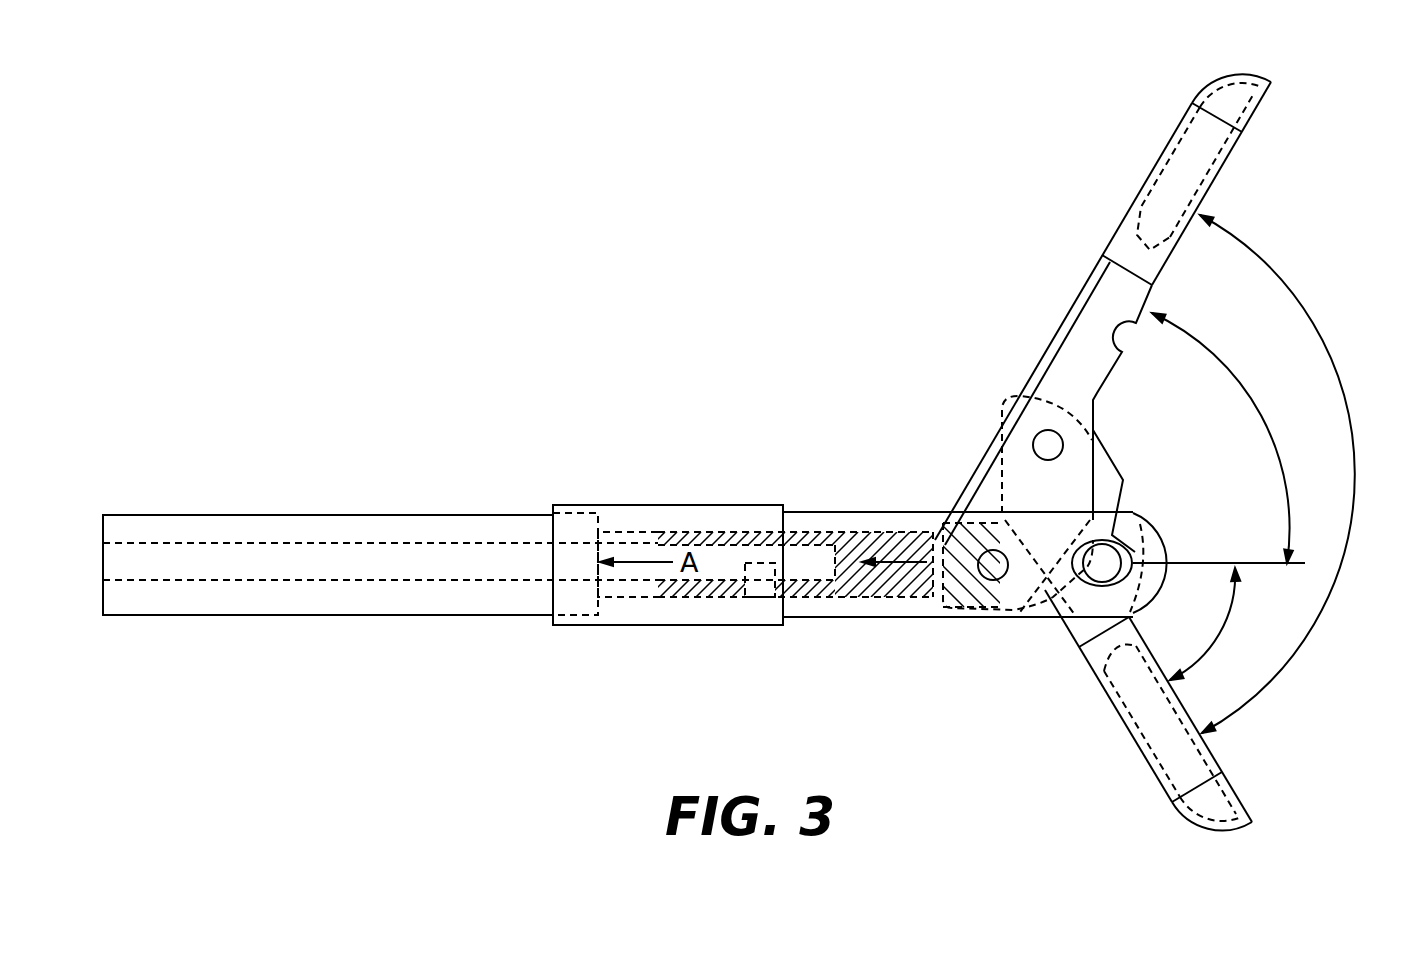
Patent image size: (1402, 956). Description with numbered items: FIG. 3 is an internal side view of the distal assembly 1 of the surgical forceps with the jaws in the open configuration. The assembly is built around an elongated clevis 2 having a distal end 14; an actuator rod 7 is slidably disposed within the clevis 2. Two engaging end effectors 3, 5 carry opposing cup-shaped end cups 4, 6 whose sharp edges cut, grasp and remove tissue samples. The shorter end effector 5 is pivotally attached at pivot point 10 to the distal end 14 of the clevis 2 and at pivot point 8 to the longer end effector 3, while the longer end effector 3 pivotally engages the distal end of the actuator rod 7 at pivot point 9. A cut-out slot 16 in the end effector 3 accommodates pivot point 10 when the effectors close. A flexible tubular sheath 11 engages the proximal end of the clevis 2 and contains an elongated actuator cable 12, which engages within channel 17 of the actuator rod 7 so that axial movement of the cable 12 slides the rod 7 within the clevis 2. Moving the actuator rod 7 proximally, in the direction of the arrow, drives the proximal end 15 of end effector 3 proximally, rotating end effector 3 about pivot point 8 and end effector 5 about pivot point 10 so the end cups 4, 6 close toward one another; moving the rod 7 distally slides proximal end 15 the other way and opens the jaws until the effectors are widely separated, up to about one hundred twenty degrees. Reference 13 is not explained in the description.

The distal assembly 1 is at (833, 512).
The clevis 2 is at (897, 617).
The end effector 3 is at (1097, 264).
The end cup 4 is at (1237, 122).
The end effector 5 is at (1087, 667).
The end cup 6 is at (1190, 760).
The actuator rod 7 is at (866, 566).
The pivot point 8 is at (1048, 460).
The pivot point 9 is at (990, 557).
The pivot point 10 is at (1140, 558).
The flexible tubular sheath 11 is at (205, 578).
The actuator cable 12 is at (643, 573).
The cam plate 13 is at (978, 587).
The distal end 14 is at (1140, 527).
The proximal end 15 is at (937, 547).
The cut-out slot 16 is at (1123, 340).
The channel 17 is at (727, 547).